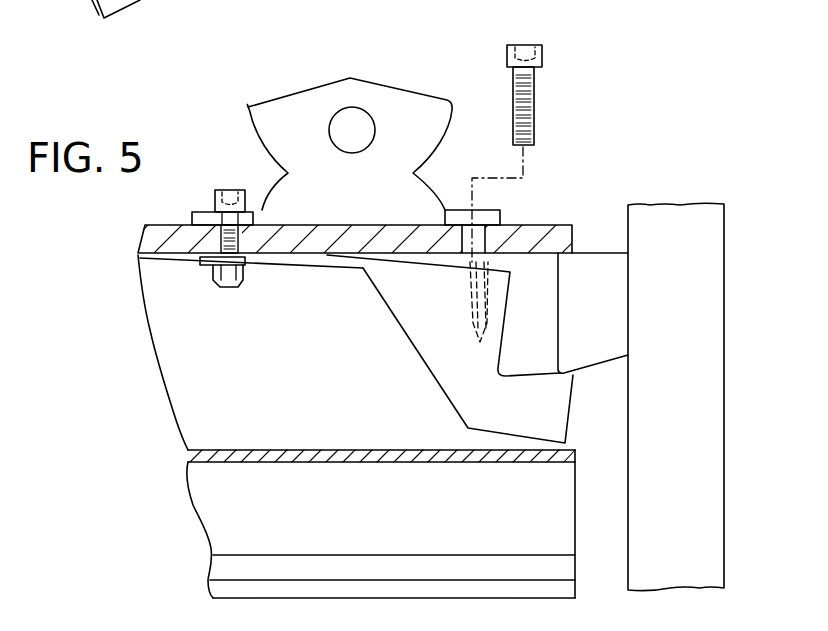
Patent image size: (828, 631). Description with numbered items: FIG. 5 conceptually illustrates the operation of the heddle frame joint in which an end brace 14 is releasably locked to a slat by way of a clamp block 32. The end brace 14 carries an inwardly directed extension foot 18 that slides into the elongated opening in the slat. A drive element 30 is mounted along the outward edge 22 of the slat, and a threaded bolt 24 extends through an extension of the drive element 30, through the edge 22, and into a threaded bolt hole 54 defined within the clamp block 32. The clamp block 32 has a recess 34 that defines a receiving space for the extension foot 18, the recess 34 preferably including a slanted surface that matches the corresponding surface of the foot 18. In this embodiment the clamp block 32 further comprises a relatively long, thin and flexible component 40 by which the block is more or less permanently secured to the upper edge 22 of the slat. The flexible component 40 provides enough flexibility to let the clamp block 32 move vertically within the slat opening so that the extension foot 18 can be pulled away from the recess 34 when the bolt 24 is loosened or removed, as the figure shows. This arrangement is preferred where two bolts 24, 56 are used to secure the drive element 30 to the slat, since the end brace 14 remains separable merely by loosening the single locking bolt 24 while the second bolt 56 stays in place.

The end brace 14 is at (692, 414).
The extension foot 18 is at (607, 326).
The outward edge of the slat 22 is at (550, 232).
The threaded bolt 24 is at (542, 50).
The drive element 30 is at (412, 95).
The clamp block 32 is at (445, 395).
The recess 34 is at (527, 373).
The flexible component 40 is at (300, 266).
The threaded bolt hole 54 is at (472, 298).
The bolt 56 is at (212, 192).